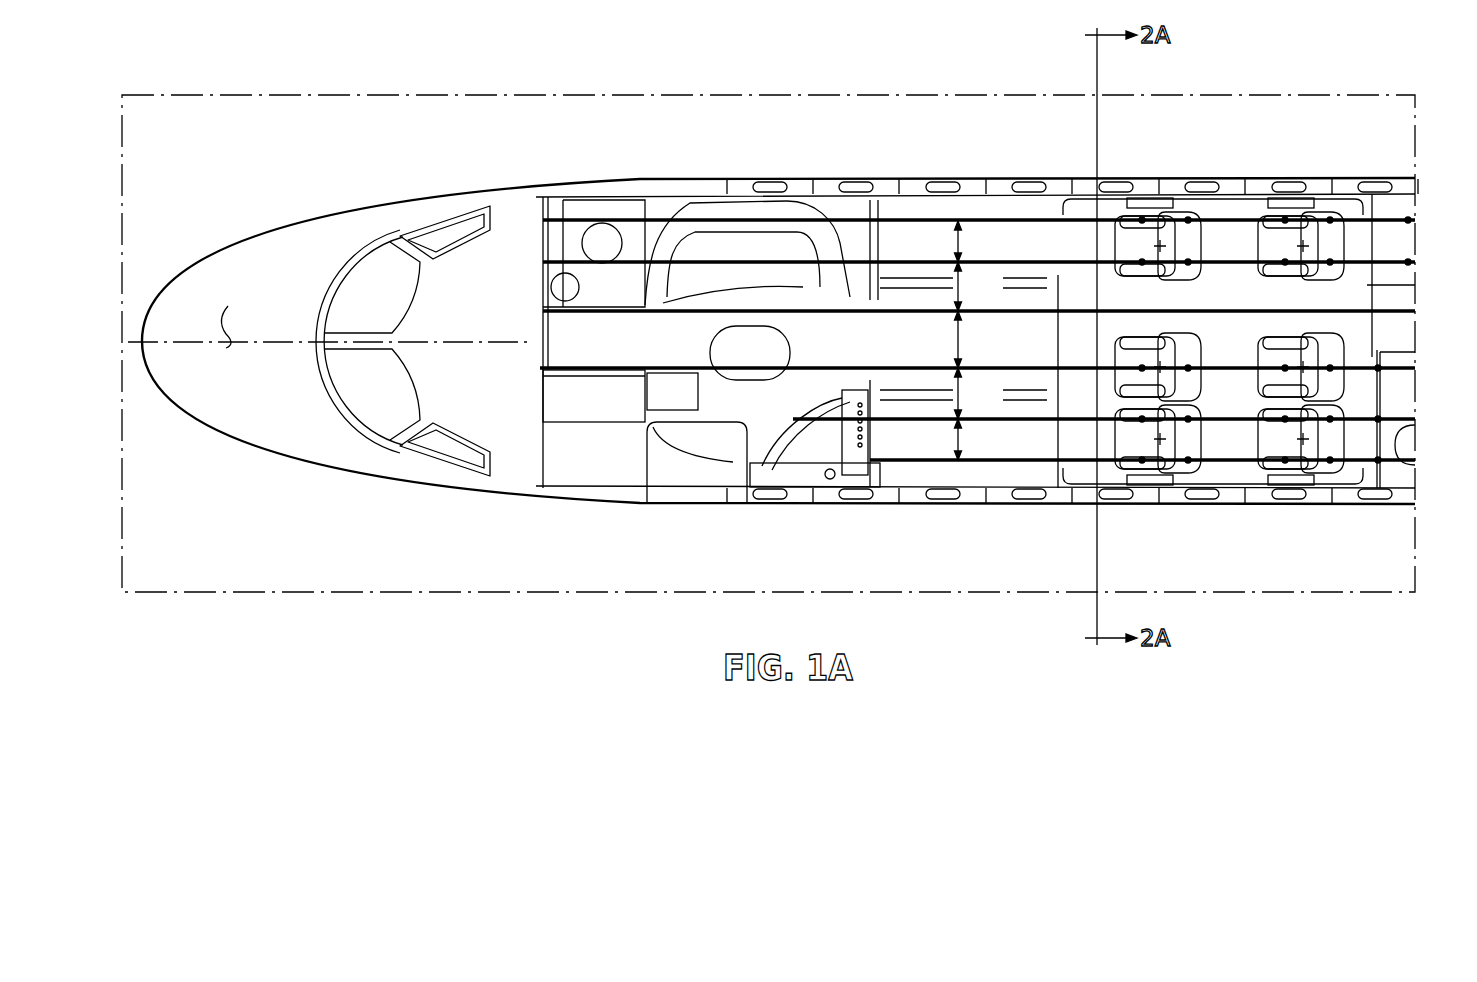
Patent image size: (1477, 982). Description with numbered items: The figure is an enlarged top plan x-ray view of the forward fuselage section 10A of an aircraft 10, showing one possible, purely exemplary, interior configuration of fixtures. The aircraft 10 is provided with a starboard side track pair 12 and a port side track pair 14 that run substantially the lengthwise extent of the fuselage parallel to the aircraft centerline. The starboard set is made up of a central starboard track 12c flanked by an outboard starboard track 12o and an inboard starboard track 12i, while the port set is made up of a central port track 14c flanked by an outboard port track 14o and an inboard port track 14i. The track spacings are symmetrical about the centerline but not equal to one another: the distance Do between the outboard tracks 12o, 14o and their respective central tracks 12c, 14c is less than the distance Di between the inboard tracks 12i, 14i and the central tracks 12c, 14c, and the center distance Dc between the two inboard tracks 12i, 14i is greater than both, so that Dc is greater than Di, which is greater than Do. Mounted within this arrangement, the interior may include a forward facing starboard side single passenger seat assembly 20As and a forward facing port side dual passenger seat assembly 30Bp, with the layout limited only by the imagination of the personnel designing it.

The aircraft 10 is at (208, 244).
The forward fuselage section 10A is at (906, 172).
The starboard side track pair 12 is at (1420, 217).
The outboard starboard track 12o is at (704, 220).
The central starboard track 12c is at (1035, 262).
The inboard starboard track 12i is at (851, 313).
The port side track pair 14 is at (1420, 367).
The inboard port track 14i is at (1078, 368).
The central port track 14c is at (1238, 423).
The outboard port track 14o is at (1018, 462).
The forward facing starboard side single passenger seat assembly 20As is at (1252, 243).
The forward facing port side dual passenger seat assembly 30Bp is at (1297, 402).